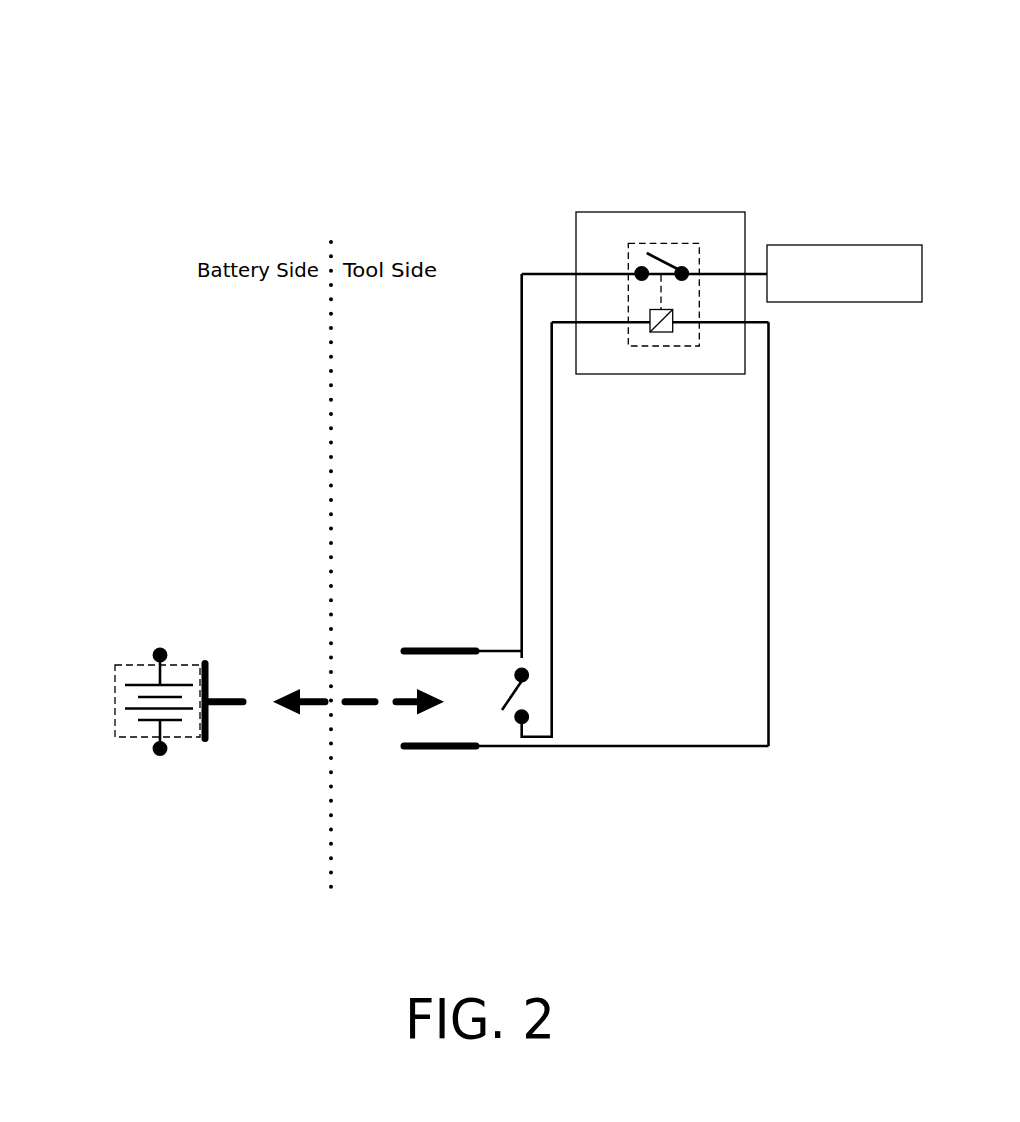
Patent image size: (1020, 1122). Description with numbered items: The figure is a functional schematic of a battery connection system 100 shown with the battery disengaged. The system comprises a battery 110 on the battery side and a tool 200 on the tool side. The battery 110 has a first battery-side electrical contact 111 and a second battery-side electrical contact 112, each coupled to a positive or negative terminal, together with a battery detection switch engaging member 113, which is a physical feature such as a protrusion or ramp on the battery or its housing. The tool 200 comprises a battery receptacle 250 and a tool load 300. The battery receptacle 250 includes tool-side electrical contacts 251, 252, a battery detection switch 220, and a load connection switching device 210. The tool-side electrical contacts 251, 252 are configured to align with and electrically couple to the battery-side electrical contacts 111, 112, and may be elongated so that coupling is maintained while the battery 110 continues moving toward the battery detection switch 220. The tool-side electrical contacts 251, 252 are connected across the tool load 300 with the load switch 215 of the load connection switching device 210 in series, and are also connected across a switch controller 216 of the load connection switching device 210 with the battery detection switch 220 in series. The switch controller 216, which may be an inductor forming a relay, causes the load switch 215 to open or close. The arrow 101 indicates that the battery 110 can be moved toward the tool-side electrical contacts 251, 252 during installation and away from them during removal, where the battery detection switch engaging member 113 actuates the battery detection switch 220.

The battery connection system 100 is at (246, 51).
The arrow 101 is at (358, 737).
The battery 110 is at (101, 701).
The first battery-side electrical contact 111 is at (114, 633).
The second battery-side electrical contact 112 is at (121, 759).
The battery detection switch engaging member 113 is at (182, 759).
The tool 200 is at (690, 294).
The load connection switching device 210 is at (652, 212).
The load switch 215 is at (644, 253).
The switch controller 216 is at (660, 369).
The battery detection switch 220 is at (531, 694).
The battery receptacle 250 is at (582, 510).
The tool-side electrical contact 251 is at (416, 617).
The tool-side electrical contact 252 is at (488, 789).
The tool load 300 is at (833, 245).